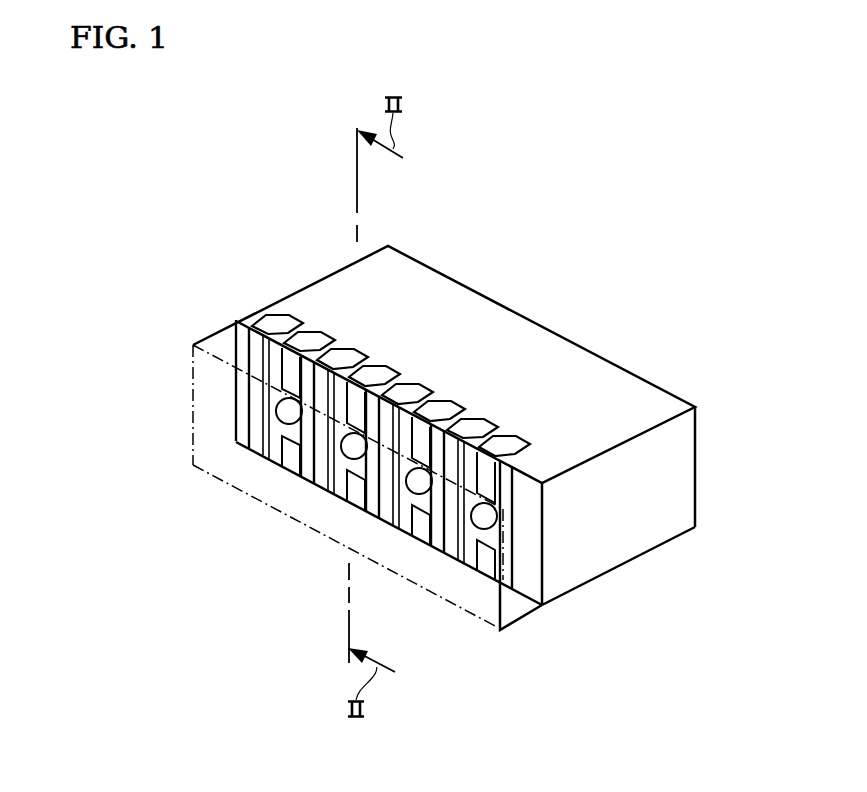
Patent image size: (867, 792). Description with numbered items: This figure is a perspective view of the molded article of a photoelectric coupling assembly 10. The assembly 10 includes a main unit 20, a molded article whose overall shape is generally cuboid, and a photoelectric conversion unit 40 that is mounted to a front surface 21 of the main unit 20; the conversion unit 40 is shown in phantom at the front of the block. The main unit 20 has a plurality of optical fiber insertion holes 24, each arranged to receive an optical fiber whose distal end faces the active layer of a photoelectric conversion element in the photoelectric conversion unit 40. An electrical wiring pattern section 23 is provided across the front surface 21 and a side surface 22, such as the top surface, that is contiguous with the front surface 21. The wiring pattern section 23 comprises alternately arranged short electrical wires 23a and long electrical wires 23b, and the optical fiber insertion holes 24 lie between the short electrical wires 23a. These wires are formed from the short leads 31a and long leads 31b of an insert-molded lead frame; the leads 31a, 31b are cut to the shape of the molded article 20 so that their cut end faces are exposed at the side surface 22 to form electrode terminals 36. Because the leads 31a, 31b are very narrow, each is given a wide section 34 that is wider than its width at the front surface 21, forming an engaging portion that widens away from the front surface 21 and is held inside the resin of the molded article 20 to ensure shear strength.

The photoelectric coupling assembly 10 is at (278, 139).
The main unit 20 is at (312, 276).
The front surface 21 is at (548, 547).
The side surface 22 is at (632, 408).
The electrical wiring pattern section 23 is at (399, 331).
The short electrical wires 23a is at (528, 436).
The long electrical wires 23b is at (470, 437).
The optical fiber insertion holes 24 is at (418, 496).
The short leads 31a is at (292, 452).
The long leads 31b is at (258, 440).
The wide section 34 is at (263, 308).
The electrode terminals 36 is at (386, 372).
The photoelectric conversion unit 40 is at (193, 334).